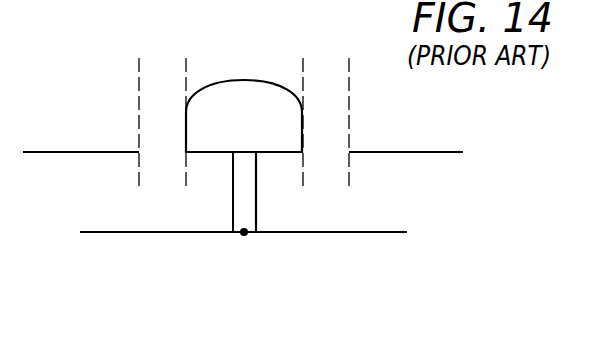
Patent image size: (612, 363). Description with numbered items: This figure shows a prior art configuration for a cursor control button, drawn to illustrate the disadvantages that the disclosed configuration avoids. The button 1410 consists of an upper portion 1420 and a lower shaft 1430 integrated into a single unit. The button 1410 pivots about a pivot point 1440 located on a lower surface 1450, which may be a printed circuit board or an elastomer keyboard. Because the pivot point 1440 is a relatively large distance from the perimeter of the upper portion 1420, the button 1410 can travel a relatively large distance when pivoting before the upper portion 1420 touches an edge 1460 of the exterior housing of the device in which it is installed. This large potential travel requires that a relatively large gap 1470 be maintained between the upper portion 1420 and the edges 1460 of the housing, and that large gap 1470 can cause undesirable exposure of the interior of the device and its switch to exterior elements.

The button 1410 is at (228, 158).
The upper portion 1420 is at (242, 80).
The lower shaft 1430 is at (256, 194).
The pivot point 1440 is at (242, 238).
The lower surface 1450 is at (372, 234).
The edge of the exterior housing 1460 is at (70, 151).
The gap 1470 is at (163, 57).